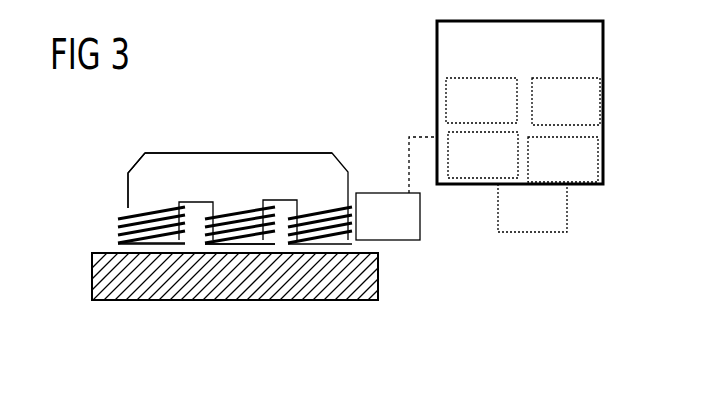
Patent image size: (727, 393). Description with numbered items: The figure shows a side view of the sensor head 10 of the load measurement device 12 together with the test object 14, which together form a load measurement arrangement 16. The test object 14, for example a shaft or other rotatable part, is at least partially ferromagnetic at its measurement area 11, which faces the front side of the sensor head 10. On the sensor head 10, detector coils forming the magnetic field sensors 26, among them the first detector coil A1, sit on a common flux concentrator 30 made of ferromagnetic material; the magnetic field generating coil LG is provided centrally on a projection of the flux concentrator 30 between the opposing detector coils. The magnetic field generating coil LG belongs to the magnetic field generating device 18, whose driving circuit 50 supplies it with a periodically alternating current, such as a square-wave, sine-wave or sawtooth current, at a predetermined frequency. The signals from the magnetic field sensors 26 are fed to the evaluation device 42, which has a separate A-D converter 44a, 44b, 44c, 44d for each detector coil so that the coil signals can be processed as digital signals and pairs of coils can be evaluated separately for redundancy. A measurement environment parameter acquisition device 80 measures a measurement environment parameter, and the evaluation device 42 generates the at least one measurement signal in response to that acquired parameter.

The sensor head 10 is at (362, 146).
The measurement area 11 is at (269, 312).
The load measurement device 12 is at (303, 108).
The test object 14 is at (235, 301).
The load measurement arrangement 16 is at (103, 181).
The magnetic field generating device 18 is at (220, 205).
The magnetic field sensors 26 is at (152, 205).
The flux concentrator 30 is at (252, 152).
The evaluation device 42 is at (520, 102).
The A-D converter 44a is at (563, 159).
The A-D converter 44b is at (481, 100).
The A-D converter 44c is at (483, 155).
The A-D converter 44d is at (566, 101).
The driving circuit 50 is at (532, 208).
The measurement environment parameter acquisition device 80 is at (396, 188).
The first detector coil A1 is at (168, 237).
The magnetic field generating coil LG is at (279, 306).